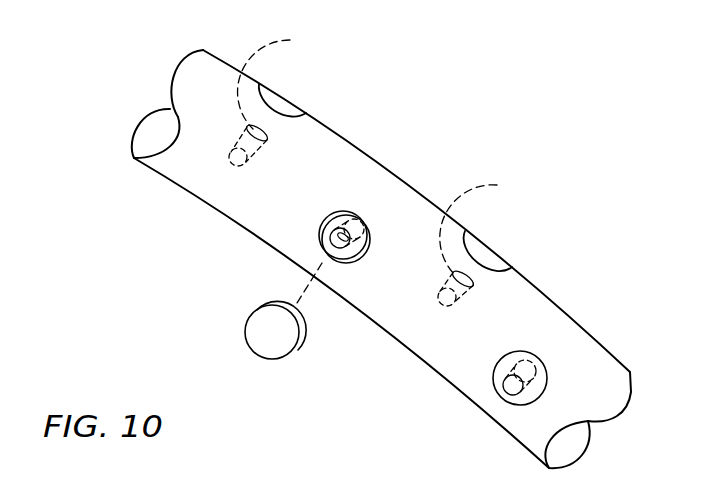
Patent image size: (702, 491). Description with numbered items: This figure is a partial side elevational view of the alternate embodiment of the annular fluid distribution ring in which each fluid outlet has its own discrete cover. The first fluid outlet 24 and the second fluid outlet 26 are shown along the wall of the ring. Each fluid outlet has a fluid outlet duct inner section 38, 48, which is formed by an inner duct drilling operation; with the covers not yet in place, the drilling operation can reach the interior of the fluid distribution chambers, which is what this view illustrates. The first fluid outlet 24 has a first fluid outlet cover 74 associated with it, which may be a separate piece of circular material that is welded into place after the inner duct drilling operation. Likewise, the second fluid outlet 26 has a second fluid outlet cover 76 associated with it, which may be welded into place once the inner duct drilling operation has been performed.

The first fluid outlet 24 is at (345, 216).
The second fluid outlet 26 is at (236, 167).
The fluid outlet duct inner section 38 is at (381, 150).
The fluid outlet duct inner section 48 is at (347, 235).
The first fluid outlet cover 74 is at (246, 328).
The second fluid outlet cover 76 is at (277, 110).